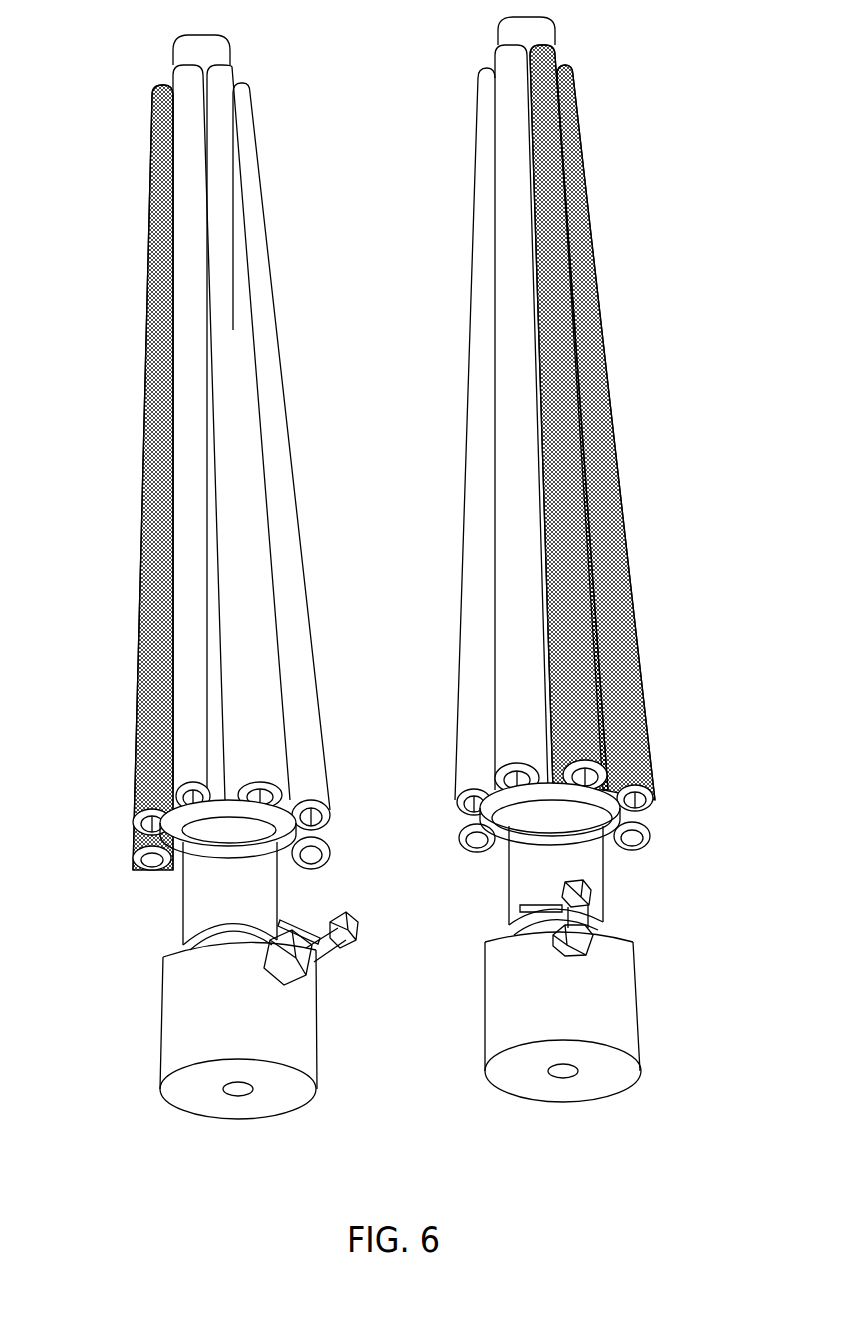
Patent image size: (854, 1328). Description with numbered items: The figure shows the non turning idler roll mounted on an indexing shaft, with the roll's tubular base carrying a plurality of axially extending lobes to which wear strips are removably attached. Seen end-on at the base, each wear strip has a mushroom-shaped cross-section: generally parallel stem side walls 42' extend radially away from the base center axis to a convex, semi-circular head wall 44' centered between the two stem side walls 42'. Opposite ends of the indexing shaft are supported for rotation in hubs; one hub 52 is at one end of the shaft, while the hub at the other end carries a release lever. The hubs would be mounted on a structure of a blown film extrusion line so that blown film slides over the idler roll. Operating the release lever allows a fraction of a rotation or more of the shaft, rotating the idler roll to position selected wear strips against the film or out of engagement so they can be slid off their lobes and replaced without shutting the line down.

The stem side walls 42' is at (233, 808).
The head wall 44' is at (143, 765).
The hub 52 is at (208, 52).